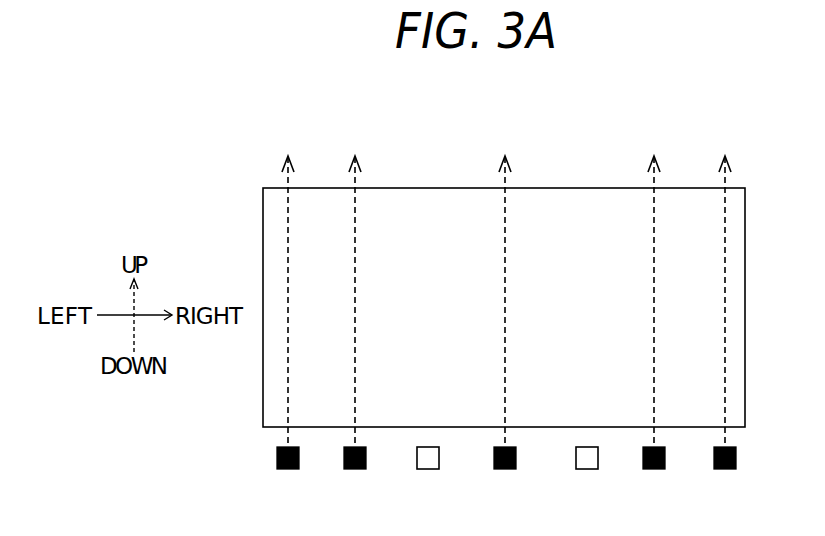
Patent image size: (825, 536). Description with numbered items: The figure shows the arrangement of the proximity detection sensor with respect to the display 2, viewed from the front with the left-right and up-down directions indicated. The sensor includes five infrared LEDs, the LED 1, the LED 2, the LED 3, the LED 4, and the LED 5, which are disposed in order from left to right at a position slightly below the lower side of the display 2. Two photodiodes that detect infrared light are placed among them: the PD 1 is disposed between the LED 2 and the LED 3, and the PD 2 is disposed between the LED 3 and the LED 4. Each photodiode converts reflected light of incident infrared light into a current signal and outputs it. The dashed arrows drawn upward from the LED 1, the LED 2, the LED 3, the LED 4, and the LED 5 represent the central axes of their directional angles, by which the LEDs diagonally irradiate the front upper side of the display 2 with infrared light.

The display 2 is at (745, 313).
The LED 1 LED1 is at (287, 332).
The LED 2 LED2 is at (355, 332).
The LED 3 LED3 is at (505, 332).
The LED 4 LED4 is at (654, 332).
The LED 5 LED5 is at (725, 332).
The PD 1 PD1 is at (428, 477).
The PD 2 PD2 is at (587, 477).